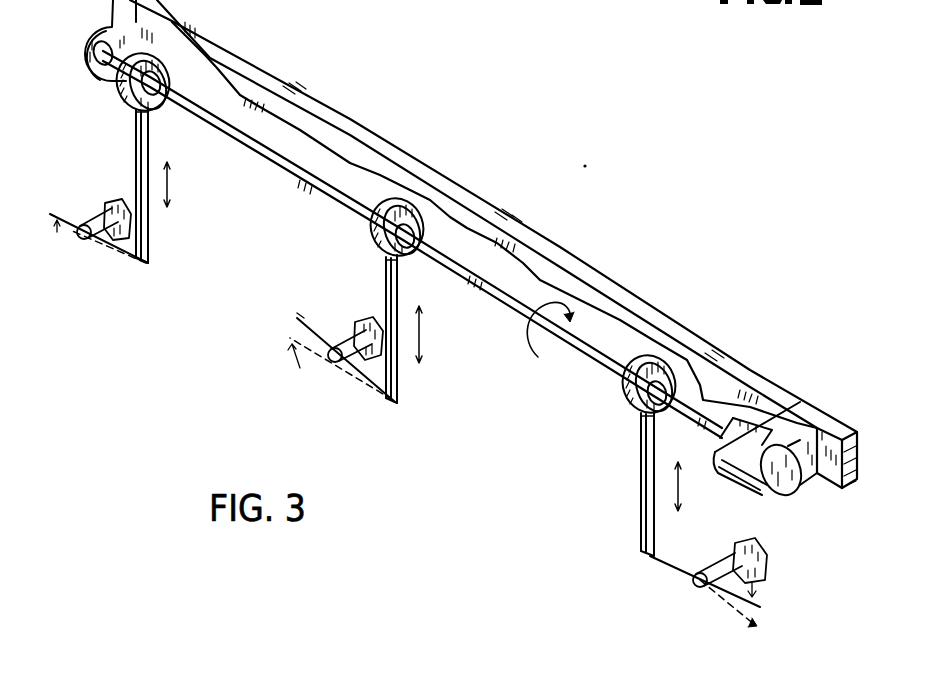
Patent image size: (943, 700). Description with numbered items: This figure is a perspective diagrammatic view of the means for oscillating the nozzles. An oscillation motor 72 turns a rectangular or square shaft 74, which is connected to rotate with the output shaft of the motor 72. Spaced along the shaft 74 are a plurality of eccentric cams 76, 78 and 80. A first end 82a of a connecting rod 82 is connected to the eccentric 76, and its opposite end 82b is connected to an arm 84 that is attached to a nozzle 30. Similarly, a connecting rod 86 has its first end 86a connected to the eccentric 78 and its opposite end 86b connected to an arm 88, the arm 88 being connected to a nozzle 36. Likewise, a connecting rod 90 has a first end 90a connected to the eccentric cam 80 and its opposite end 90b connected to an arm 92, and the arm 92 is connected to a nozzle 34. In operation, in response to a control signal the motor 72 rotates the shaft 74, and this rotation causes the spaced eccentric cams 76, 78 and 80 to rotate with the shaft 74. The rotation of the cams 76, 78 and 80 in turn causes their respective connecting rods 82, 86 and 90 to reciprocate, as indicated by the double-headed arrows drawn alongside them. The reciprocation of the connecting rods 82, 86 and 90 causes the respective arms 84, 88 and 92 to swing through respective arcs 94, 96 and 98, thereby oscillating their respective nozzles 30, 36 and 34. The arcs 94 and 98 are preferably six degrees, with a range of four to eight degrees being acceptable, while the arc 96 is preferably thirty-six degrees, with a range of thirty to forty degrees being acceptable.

The nozzle 30 is at (96, 214).
The nozzle 34 is at (727, 558).
The nozzle 36 is at (349, 334).
The oscillation motor 72 is at (740, 440).
The shaft 74 is at (318, 203).
The eccentric cam 76 is at (167, 52).
The eccentric cam 78 is at (410, 203).
The eccentric cam 80 is at (663, 358).
The connecting rod 82 is at (149, 230).
The first end of connecting rod 82a is at (150, 123).
The opposite end of connecting rod 82b is at (150, 264).
The arm 84 is at (125, 260).
The connecting rod 86 is at (400, 363).
The first end of connecting rod 86a is at (412, 267).
The opposite end of connecting rod 86b is at (398, 405).
The arm 88 is at (377, 392).
The connecting rod 90 is at (642, 475).
The first end of connecting rod 90a is at (641, 420).
The opposite end of connecting rod 90b is at (650, 552).
The arm 92 is at (680, 573).
The arc 94 is at (55, 208).
The arc 96 is at (293, 328).
The arc 98 is at (757, 617).